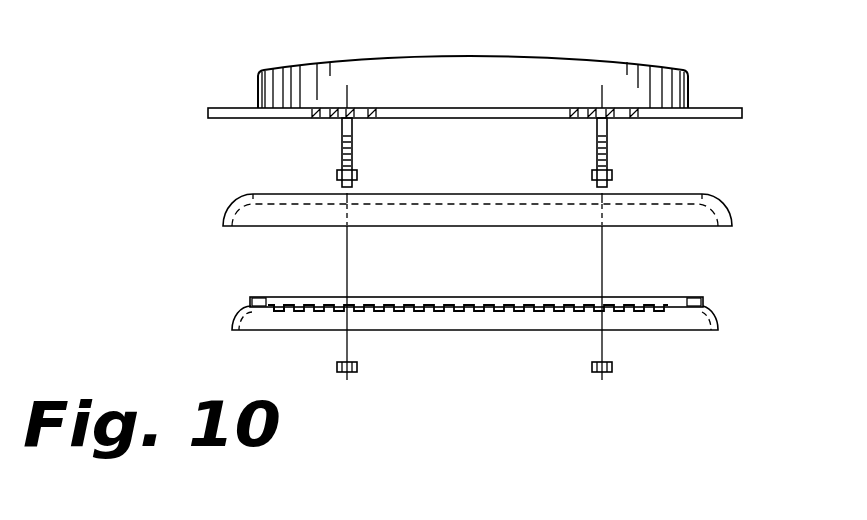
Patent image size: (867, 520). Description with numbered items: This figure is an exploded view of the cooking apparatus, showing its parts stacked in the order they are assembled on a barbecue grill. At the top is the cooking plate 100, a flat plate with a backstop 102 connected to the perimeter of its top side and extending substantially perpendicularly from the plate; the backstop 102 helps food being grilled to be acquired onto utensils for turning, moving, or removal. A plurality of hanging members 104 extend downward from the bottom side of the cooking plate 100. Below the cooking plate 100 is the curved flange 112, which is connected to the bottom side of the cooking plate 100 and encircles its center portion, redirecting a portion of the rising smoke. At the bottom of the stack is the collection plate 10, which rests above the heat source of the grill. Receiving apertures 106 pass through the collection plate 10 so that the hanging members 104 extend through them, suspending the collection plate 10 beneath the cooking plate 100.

The collection plate 10 is at (232, 318).
The cooking plate 100 is at (742, 110).
The backstop 102 is at (490, 70).
The hanging members 104 is at (607, 143).
The receiving apertures 106 is at (628, 293).
The curved flange 112 is at (222, 215).